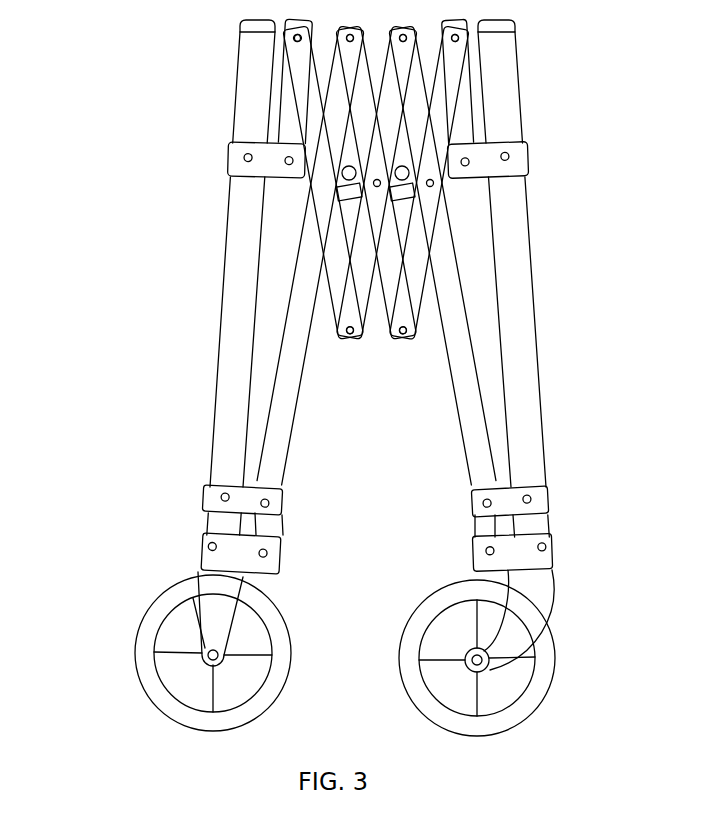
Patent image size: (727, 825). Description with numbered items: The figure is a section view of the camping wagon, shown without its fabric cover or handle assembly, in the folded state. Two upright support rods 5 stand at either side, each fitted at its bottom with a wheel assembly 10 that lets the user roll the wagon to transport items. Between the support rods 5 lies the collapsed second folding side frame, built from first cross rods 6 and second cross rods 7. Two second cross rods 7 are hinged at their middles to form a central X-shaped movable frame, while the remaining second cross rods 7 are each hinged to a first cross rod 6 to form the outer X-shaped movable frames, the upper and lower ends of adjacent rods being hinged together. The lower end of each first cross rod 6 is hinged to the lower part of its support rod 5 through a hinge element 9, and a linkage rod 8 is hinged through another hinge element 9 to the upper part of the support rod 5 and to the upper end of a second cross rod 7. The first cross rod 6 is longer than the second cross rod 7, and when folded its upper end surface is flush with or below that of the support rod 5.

The support rod 5 is at (237, 325).
The first cross rod 6 is at (452, 328).
The second cross rod 7 is at (418, 228).
The linkage rod 8 is at (295, 75).
The hinge element 9 is at (235, 160).
The wheel assembly 10 is at (183, 638).